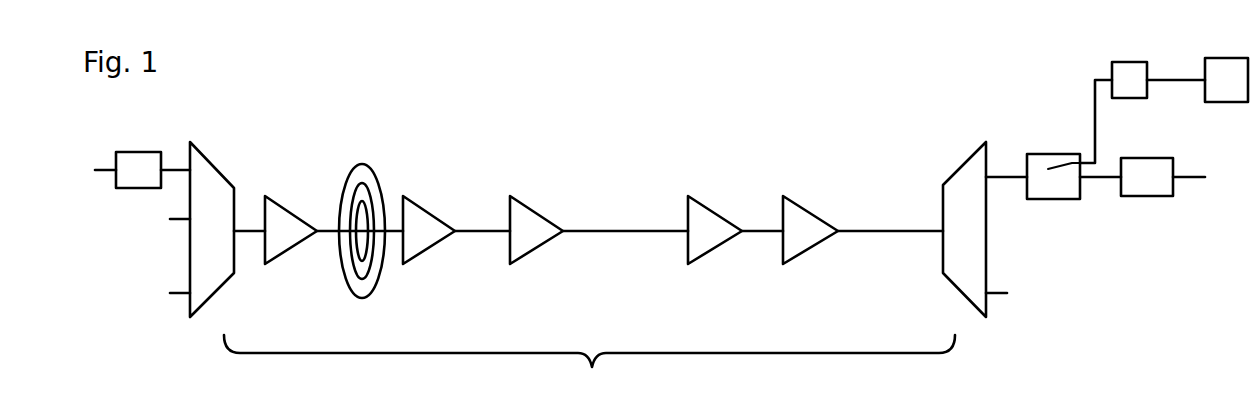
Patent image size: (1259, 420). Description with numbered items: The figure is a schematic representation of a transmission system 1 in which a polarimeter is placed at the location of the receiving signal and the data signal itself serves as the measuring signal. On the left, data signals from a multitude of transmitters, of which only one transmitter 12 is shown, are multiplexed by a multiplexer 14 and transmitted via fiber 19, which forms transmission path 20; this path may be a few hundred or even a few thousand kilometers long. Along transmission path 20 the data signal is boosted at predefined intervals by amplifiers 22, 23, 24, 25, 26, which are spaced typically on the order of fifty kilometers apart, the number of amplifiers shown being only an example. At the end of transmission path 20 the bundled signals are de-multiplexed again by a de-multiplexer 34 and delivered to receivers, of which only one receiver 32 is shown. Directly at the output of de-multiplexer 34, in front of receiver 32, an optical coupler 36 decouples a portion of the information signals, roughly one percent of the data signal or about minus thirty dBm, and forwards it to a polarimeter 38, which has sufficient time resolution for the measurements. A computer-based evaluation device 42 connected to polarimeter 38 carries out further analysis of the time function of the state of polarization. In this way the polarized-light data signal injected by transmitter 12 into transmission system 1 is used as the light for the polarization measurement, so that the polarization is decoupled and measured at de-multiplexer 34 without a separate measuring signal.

The transmission system 1 is at (903, 133).
The transmitter 12 is at (134, 149).
The multiplexer 14 is at (218, 217).
The fiber 19 is at (600, 231).
The transmission path 20 is at (589, 370).
The amplifier 22 is at (293, 244).
The amplifier 23 is at (431, 244).
The amplifier 24 is at (538, 244).
The amplifier 25 is at (716, 244).
The amplifier 26 is at (811, 244).
The receiver 32 is at (1155, 226).
The de-multiplexer 34 is at (972, 232).
The optical coupler 36 is at (1056, 196).
The polarimeter 38 is at (1137, 59).
The evaluation device 42 is at (1238, 91).